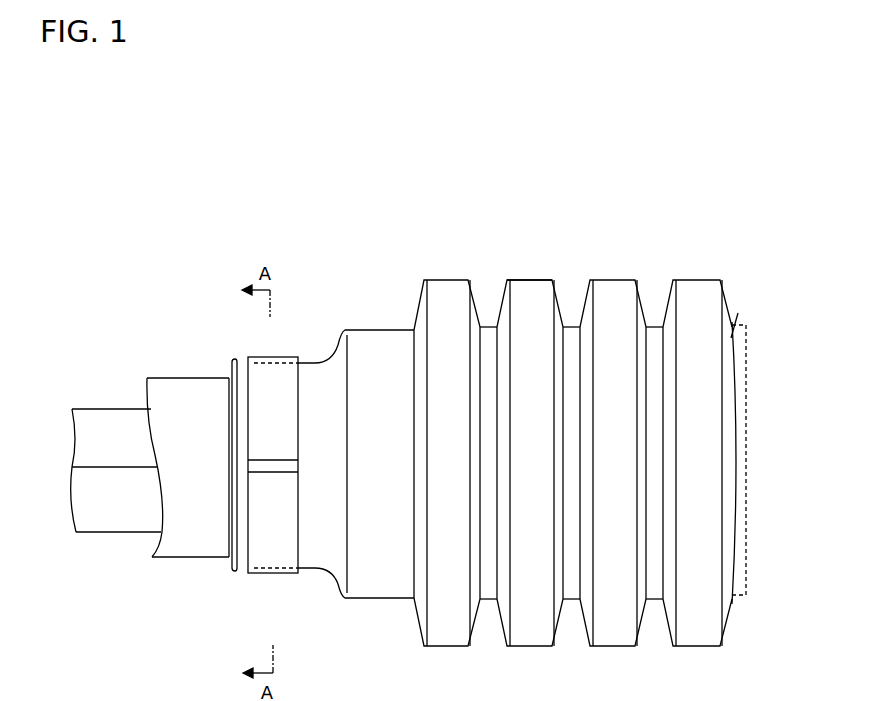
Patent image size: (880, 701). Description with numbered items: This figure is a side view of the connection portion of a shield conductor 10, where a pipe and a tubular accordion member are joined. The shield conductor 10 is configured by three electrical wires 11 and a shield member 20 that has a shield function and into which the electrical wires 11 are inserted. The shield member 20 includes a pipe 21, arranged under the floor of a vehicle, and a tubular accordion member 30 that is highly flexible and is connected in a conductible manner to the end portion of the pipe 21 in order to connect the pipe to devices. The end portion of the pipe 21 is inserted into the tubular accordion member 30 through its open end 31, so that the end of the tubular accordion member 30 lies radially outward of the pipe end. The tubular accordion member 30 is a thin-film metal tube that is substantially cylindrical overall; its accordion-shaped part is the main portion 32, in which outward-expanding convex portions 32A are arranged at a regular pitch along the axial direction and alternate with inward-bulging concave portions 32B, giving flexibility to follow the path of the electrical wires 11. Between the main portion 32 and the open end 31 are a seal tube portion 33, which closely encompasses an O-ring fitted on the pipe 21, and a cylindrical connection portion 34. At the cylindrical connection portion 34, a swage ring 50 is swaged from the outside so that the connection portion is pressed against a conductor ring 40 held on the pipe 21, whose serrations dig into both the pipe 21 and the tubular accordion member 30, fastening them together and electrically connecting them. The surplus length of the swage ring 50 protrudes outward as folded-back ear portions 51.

The shield conductor 10 is at (265, 203).
The electrical wire 11 is at (100, 423).
The shield member 20 is at (438, 162).
The pipe 21 is at (164, 388).
The tubular accordion member 30 is at (436, 272).
The open end 31 is at (232, 522).
The main portion 32 is at (521, 274).
The convex portion 32A is at (539, 278).
The concave portion 32B is at (570, 325).
The seal tube portion 33 is at (380, 600).
The cylindrical connection portion 34 is at (283, 573).
The conductor ring 40 is at (285, 358).
The swage ring 50 is at (263, 530).
The ear portion 51 is at (263, 467).